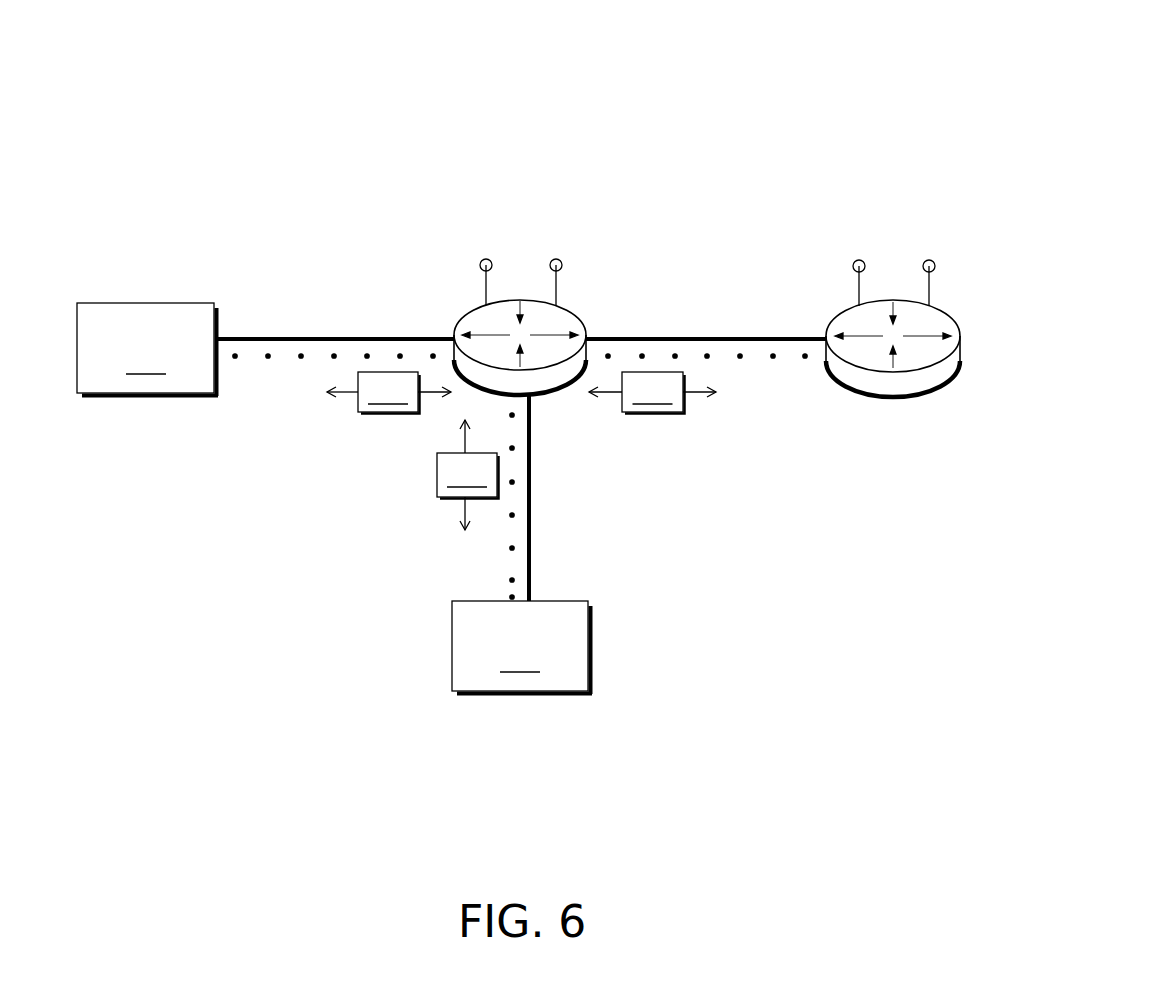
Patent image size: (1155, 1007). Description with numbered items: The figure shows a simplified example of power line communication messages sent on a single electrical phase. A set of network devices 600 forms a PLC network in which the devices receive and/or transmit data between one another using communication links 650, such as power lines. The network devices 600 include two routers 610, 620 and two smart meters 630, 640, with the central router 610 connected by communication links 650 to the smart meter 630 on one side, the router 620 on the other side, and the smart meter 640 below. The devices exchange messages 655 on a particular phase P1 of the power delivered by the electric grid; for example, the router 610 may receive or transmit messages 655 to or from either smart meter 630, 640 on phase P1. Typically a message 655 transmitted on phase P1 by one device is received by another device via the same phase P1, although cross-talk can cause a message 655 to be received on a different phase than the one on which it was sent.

The network devices 600 is at (1052, 93).
The router 610 is at (580, 313).
The router 620 is at (953, 313).
The smart meter 630 is at (147, 349).
The smart meter 640 is at (522, 647).
The communication links 650 is at (332, 338).
The messages 655 is at (521, 451).
The phase P1 is at (280, 358).